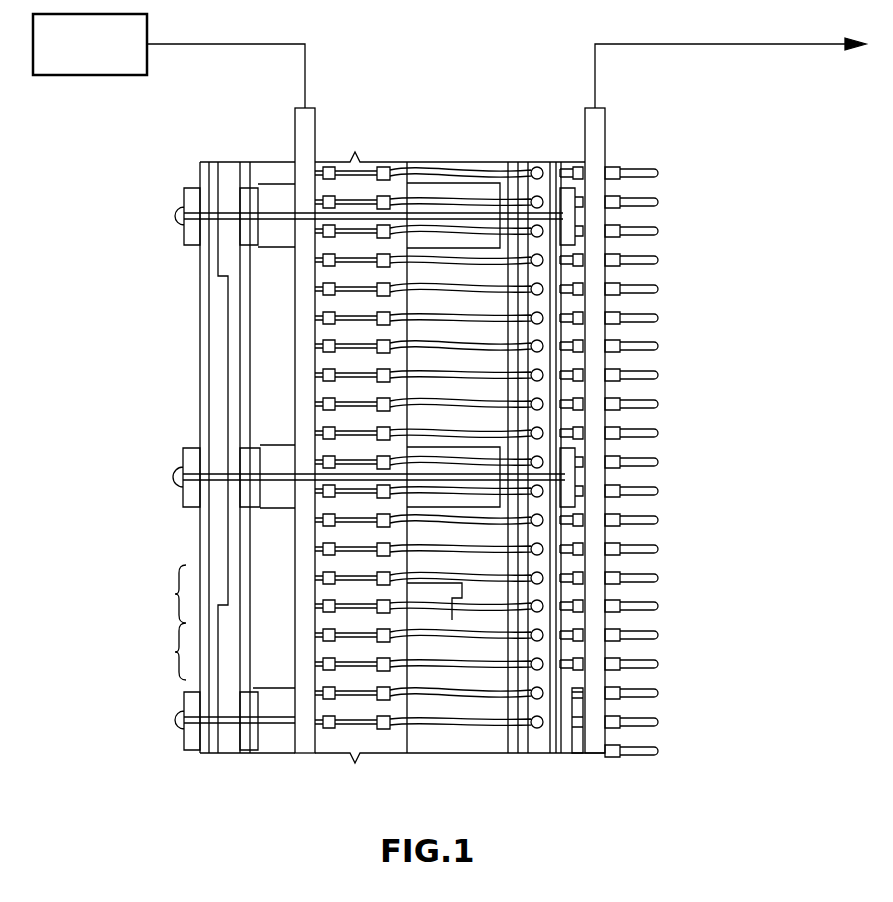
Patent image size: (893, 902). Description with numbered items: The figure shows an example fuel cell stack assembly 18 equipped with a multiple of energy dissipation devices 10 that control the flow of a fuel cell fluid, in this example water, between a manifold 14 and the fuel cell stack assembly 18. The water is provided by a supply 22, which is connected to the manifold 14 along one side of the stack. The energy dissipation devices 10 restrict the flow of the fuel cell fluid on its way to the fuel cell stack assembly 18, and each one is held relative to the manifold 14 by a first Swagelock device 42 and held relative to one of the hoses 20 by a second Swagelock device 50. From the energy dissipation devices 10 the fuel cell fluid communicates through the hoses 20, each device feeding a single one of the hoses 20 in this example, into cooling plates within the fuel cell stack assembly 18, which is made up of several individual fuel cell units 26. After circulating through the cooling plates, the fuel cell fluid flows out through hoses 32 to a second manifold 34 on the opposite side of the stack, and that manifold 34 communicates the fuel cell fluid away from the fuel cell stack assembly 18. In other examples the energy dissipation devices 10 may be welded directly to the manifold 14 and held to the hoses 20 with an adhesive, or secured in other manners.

The energy dissipation device 10 is at (358, 200).
The manifold 14 is at (298, 133).
The fuel cell stack assembly 18 is at (213, 162).
The hose 20 is at (497, 200).
The supply 22 is at (108, 58).
The fuel cell unit 26 is at (166, 622).
The hose 32 is at (657, 262).
The manifold 34 is at (598, 135).
The first Swagelock device 42 is at (330, 207).
The second Swagelock device 50 is at (387, 208).